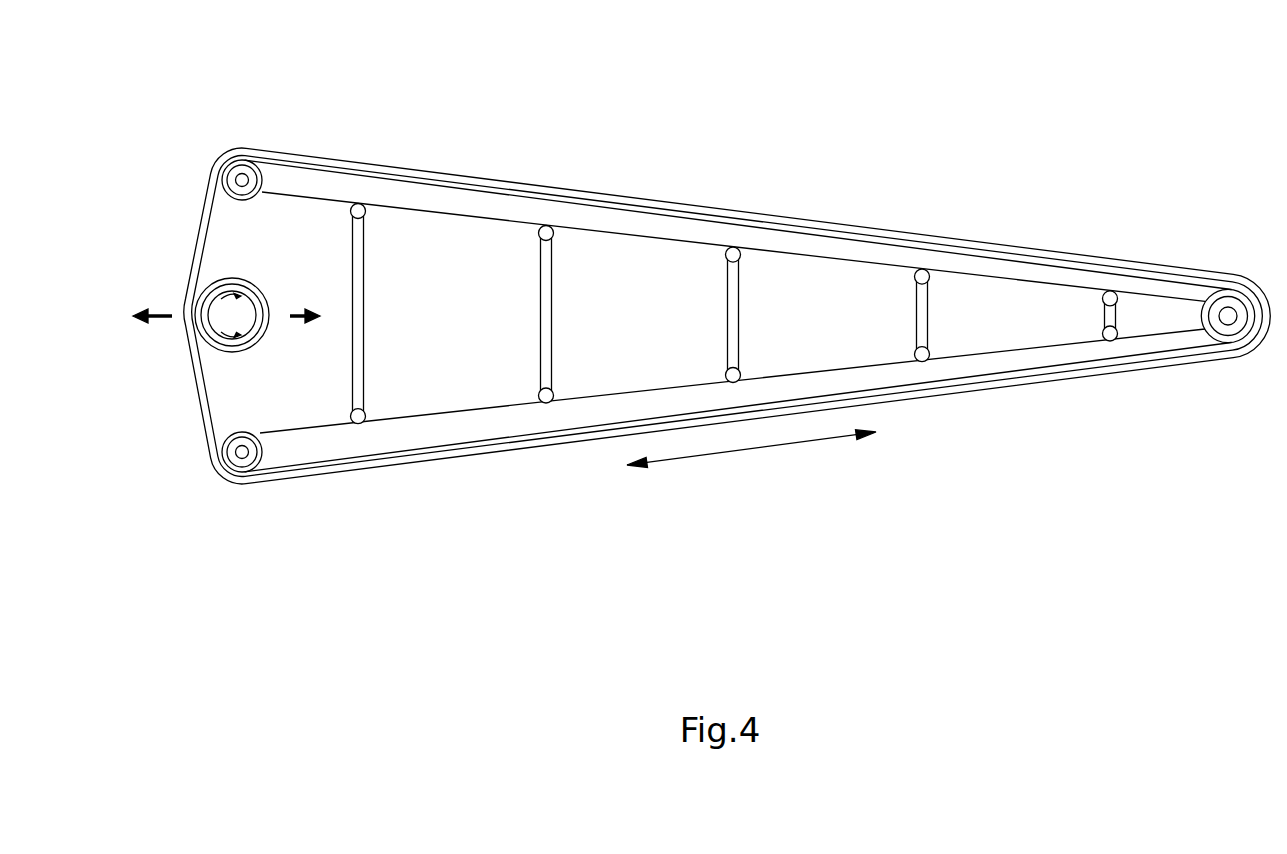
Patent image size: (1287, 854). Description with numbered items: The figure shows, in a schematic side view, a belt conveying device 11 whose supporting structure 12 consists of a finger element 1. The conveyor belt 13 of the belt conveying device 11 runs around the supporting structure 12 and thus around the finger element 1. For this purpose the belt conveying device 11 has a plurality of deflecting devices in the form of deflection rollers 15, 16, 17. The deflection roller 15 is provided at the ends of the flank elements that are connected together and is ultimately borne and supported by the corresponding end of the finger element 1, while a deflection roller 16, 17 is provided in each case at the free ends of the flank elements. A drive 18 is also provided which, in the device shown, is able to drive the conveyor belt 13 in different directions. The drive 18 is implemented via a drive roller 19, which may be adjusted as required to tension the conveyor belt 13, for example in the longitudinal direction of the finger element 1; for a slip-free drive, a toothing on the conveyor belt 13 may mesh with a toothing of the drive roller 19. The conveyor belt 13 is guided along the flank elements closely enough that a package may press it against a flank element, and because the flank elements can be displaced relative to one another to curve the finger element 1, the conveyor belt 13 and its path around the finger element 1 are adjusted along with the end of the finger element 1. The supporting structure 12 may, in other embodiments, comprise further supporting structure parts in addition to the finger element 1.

The finger element 1 is at (840, 312).
The belt conveying device 11 is at (727, 262).
The supporting structure 12 is at (446, 386).
The conveyor belt 13 is at (356, 163).
The deflection roller 15 is at (238, 168).
The deflection roller 16 is at (1233, 305).
The deflection roller 17 is at (241, 462).
The drive 18 is at (223, 312).
The drive roller 19 is at (218, 347).